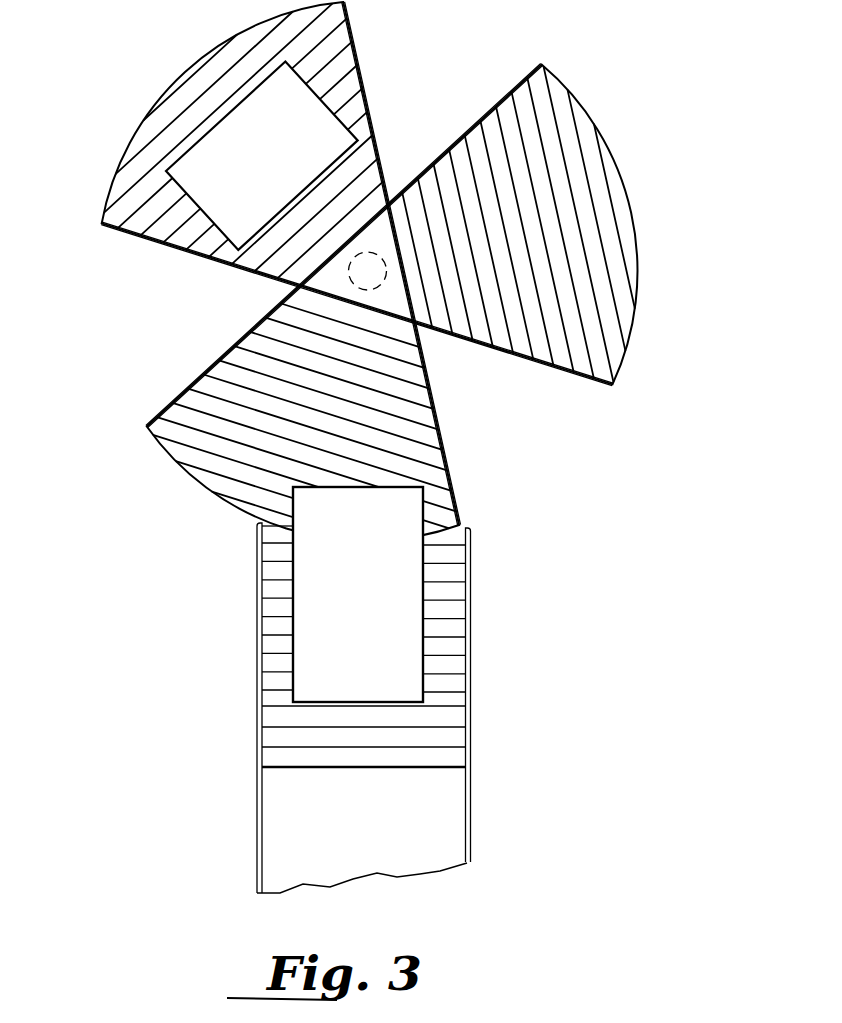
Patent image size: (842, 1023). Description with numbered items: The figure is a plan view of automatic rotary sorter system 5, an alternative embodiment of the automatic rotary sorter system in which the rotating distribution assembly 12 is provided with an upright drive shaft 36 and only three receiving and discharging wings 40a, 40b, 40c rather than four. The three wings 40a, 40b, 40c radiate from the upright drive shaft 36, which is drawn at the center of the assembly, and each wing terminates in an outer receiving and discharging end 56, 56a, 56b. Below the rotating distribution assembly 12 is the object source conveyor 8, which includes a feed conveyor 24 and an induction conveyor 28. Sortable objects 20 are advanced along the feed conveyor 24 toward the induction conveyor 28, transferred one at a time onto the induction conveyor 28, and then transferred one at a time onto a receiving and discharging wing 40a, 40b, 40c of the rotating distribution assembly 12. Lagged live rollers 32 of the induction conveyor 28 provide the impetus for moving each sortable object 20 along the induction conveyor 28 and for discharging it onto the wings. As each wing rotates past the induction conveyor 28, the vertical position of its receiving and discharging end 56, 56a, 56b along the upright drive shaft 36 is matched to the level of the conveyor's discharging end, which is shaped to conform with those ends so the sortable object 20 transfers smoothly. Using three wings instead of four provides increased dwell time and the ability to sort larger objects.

The automatic rotary sorter system 5 is at (374, 271).
The object source conveyor 8 is at (365, 708).
The rotating distribution assembly 12 is at (351, 271).
The sortable object 20 is at (248, 130).
The feed conveyor 24 is at (471, 816).
The induction conveyor 28 is at (252, 658).
The lagged live rollers 32 is at (288, 753).
The upright drive shaft 36 is at (350, 281).
The receiving and discharging wing 40a is at (563, 384).
The receiving and discharging wing 40b is at (370, 69).
The receiving and discharging wing 40c is at (172, 383).
The receiving and discharging end 56 is at (160, 461).
The receiving and discharging end 56a is at (610, 145).
The receiving and discharging end 56b is at (120, 153).